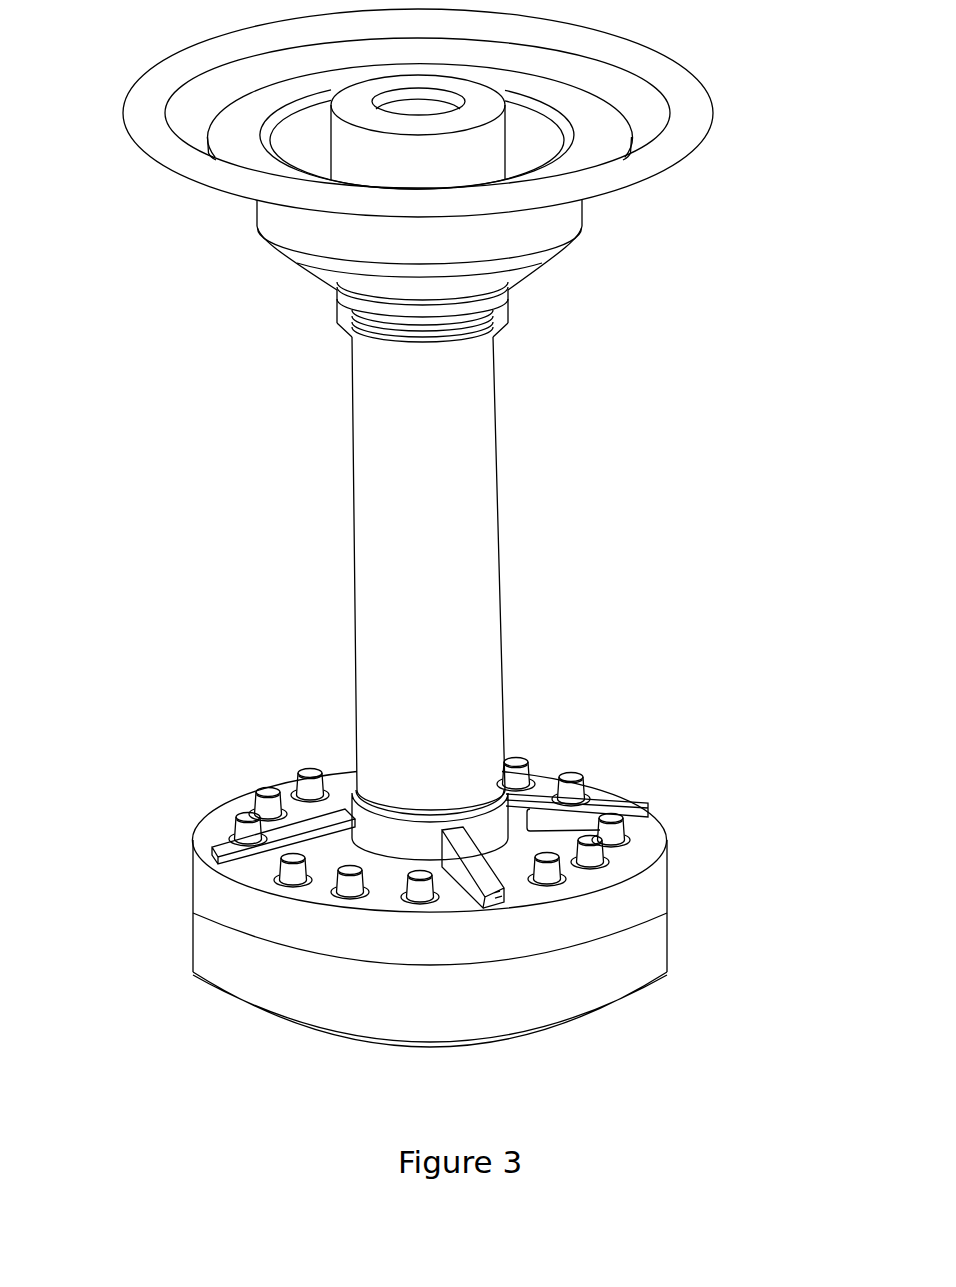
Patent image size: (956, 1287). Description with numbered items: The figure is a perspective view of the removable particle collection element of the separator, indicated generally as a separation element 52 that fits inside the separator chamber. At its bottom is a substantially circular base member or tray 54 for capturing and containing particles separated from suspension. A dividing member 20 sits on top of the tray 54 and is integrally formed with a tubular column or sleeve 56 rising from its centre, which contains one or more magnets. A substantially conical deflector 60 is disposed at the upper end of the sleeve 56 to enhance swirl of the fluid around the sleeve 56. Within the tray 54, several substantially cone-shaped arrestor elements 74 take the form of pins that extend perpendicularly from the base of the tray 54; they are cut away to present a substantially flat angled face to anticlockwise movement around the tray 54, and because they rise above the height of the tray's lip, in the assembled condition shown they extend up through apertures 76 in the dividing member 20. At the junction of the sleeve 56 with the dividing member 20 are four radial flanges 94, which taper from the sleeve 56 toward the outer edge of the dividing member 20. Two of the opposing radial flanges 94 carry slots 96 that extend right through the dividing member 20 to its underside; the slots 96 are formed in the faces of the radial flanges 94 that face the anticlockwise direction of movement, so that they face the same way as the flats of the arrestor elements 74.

The separation element 52 is at (676, 411).
The conical deflector 60 is at (572, 212).
The tubular column or sleeve 56 is at (478, 603).
The dividing member 20 is at (653, 878).
The base member or tray 54 is at (653, 933).
The radial flanges 94 is at (222, 842).
The slots 96 is at (537, 822).
The arrestor elements 74 is at (295, 878).
The apertures 76 is at (283, 880).